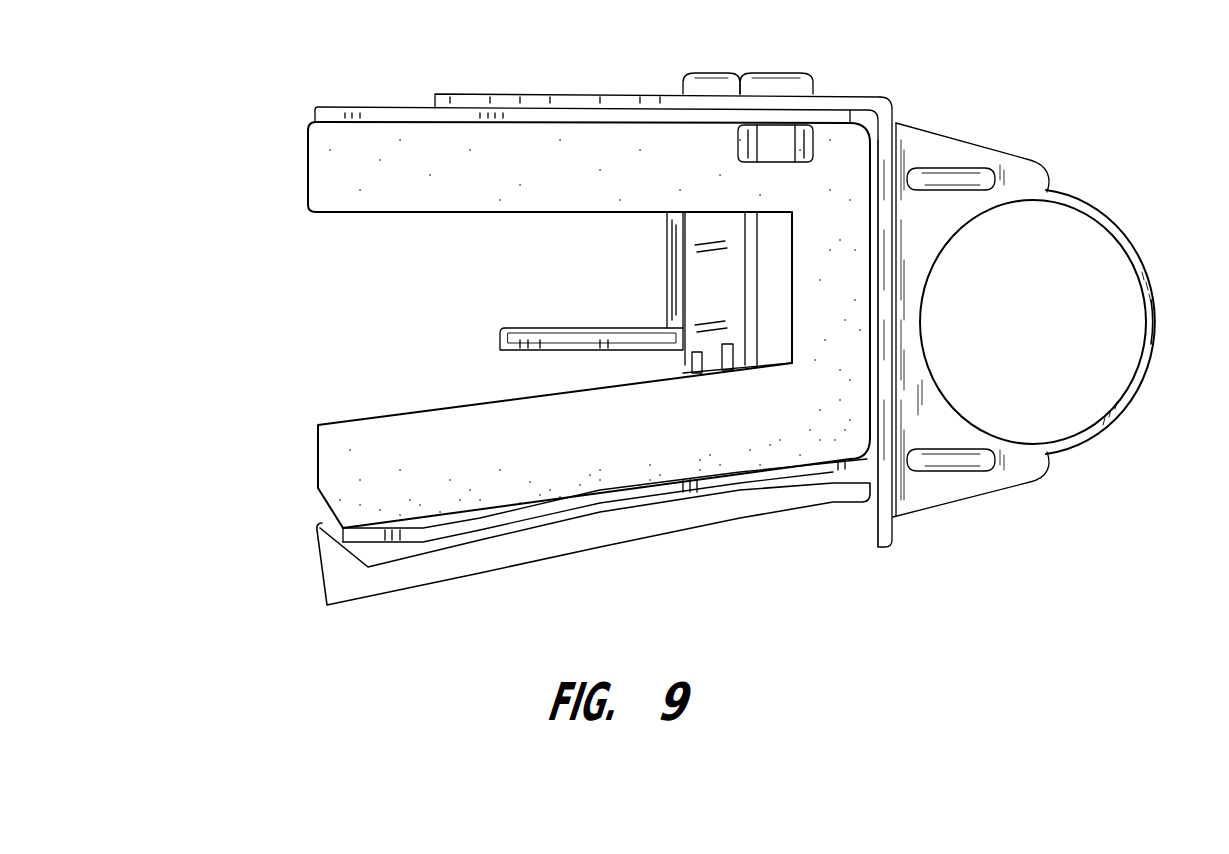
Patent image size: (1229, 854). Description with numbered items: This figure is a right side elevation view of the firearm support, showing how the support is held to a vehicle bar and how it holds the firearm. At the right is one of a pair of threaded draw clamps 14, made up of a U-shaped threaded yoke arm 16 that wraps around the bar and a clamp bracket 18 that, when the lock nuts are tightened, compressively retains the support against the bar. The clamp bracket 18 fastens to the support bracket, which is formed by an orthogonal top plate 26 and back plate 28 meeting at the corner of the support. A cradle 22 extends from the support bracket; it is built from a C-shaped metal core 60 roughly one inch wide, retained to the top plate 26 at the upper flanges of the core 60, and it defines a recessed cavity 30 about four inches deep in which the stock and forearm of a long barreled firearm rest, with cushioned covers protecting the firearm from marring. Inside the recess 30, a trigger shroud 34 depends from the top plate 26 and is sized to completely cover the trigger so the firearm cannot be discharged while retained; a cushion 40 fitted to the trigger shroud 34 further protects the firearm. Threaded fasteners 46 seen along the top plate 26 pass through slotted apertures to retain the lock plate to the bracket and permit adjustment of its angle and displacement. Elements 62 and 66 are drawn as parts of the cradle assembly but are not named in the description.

The threaded draw clamp 14 is at (1143, 225).
The threaded yoke arm 16 is at (1154, 360).
The clamp bracket 18 is at (997, 487).
The cradle 22 is at (295, 152).
The top plate 26 is at (886, 548).
The back plate 28 is at (480, 93).
The recessed cavity 30 is at (325, 295).
The trigger shroud 34 is at (488, 332).
The cushion 40 is at (667, 260).
The threaded fastener 46 is at (782, 73).
The metal core 60 is at (332, 543).
The pad 62 is at (318, 490).
The plate 66 is at (315, 107).